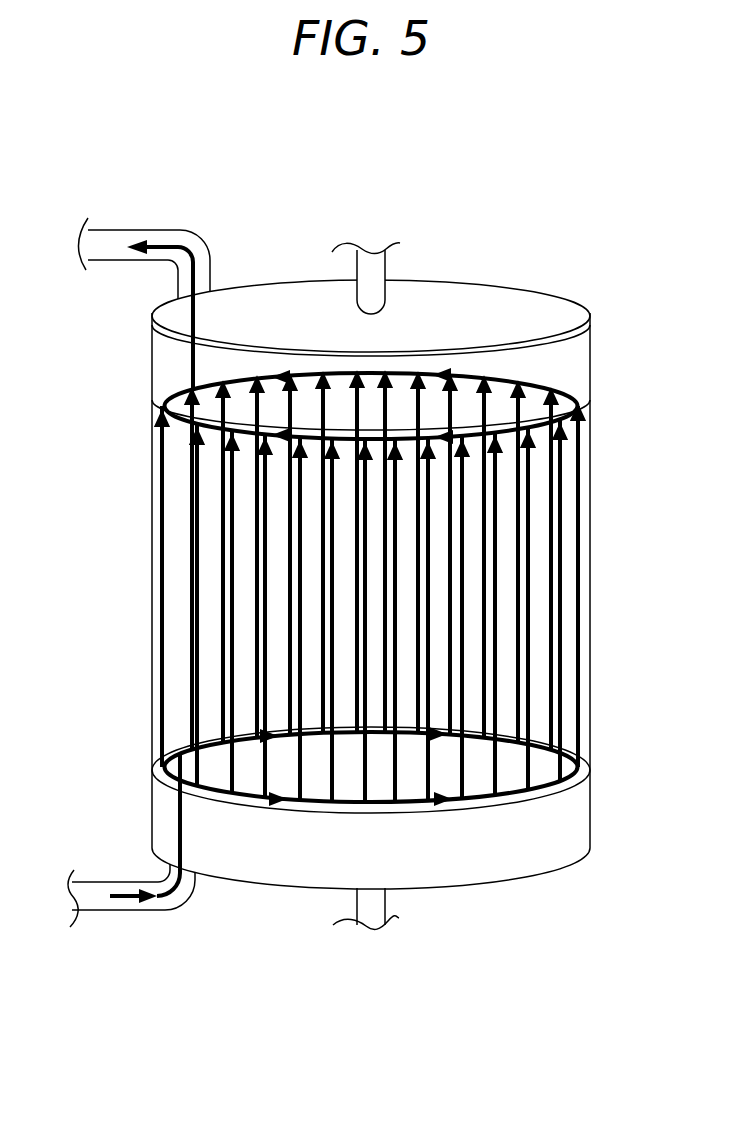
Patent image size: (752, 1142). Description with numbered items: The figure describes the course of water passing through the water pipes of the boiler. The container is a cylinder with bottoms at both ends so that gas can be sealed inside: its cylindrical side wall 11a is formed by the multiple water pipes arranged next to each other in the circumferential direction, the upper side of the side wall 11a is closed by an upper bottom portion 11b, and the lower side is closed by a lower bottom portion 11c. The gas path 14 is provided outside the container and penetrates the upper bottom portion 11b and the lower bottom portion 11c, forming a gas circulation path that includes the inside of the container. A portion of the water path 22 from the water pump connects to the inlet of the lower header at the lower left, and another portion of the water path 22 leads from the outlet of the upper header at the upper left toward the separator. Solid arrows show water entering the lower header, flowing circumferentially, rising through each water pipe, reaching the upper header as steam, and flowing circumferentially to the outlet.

The side wall 11a is at (152, 588).
The upper bottom portion 11b is at (503, 297).
The lower bottom portion 11c is at (523, 866).
The gas path 14 is at (383, 272).
The water path 22 is at (107, 229).